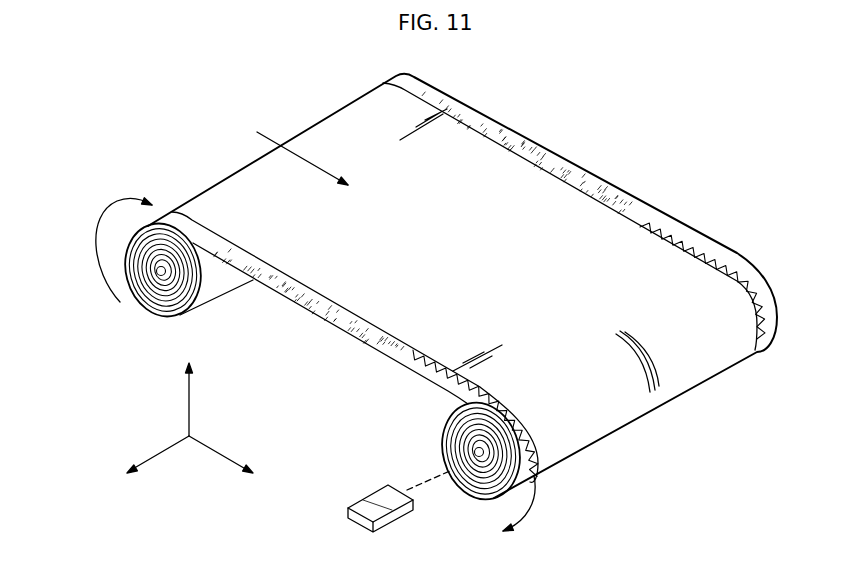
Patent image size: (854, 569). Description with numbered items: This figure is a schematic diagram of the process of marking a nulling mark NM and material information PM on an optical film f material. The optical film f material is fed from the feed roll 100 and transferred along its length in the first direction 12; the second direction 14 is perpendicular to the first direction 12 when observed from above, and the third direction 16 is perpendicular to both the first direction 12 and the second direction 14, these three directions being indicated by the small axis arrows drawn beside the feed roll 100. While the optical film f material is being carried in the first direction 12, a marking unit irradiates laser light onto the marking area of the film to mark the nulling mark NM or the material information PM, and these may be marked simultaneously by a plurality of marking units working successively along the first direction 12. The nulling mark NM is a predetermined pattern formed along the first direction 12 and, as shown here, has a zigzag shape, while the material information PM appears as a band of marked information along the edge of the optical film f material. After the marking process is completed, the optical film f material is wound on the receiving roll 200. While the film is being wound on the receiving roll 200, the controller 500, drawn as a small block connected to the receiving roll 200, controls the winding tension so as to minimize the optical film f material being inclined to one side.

The feed roll 100 is at (152, 283).
The receiving roll 200 is at (480, 488).
The controller 500 is at (362, 508).
The first direction 12 is at (234, 463).
The second direction 14 is at (144, 463).
The third direction 16 is at (190, 385).
The material information PM is at (545, 150).
The optical film f is at (650, 208).
The nulling mark NM is at (700, 250).